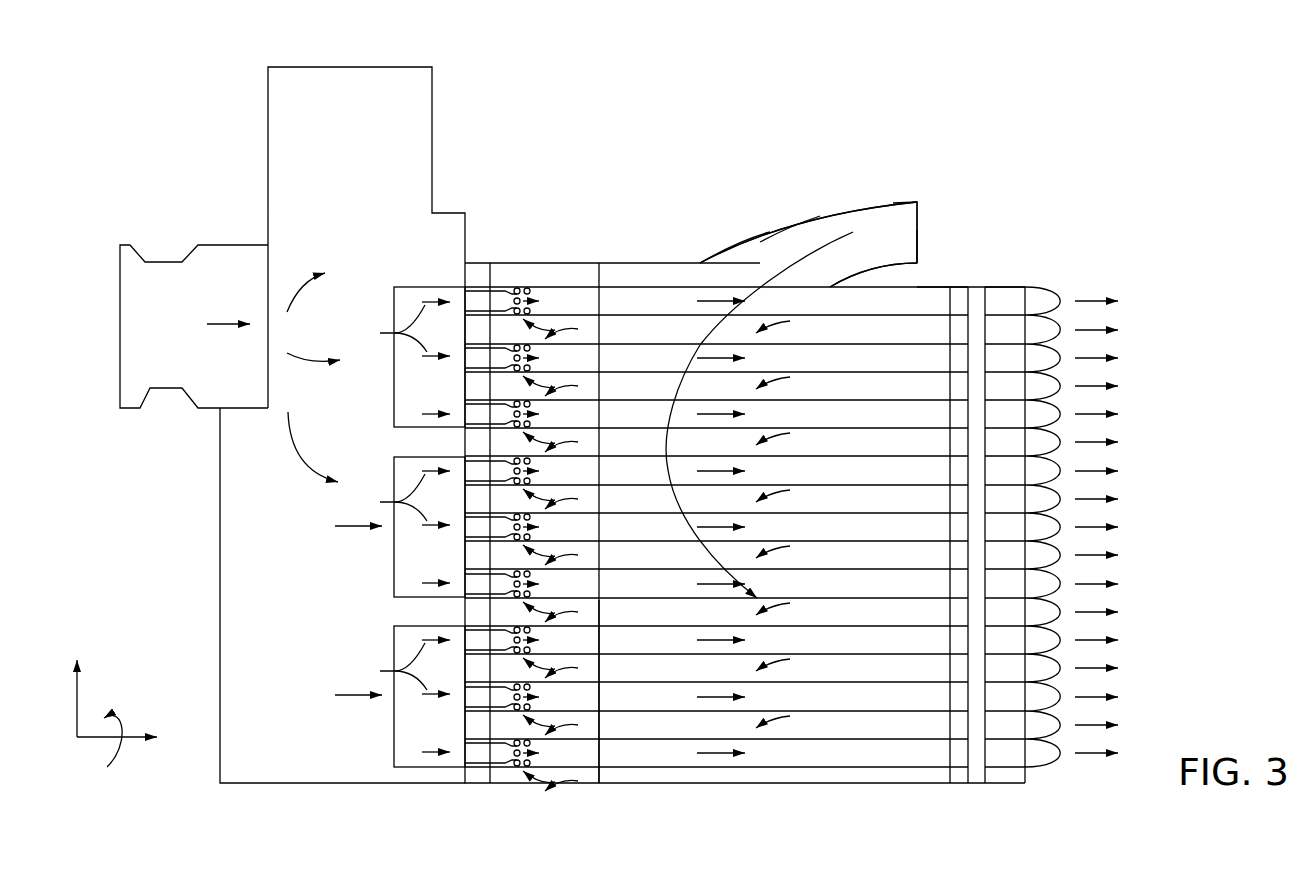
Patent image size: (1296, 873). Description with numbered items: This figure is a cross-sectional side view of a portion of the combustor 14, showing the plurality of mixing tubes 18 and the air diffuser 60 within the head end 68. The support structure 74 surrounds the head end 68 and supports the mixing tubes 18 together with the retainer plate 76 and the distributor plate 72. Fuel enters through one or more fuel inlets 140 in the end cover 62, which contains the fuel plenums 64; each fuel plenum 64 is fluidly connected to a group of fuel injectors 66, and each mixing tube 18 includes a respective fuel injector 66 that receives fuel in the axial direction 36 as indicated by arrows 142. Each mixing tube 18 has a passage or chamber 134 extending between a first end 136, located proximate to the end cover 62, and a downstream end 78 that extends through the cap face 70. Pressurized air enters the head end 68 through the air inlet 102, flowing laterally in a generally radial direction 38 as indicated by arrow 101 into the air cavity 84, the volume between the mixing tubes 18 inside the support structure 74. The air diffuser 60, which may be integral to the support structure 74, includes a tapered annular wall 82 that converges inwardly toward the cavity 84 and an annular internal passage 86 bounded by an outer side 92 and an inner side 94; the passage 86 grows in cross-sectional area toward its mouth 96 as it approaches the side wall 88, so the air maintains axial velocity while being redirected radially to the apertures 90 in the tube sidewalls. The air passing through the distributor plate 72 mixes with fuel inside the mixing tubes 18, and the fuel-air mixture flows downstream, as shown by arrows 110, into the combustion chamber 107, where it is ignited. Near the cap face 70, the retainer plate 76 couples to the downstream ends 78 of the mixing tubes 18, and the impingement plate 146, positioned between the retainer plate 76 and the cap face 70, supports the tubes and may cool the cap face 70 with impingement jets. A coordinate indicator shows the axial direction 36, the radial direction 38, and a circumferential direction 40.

The combustor 14 is at (1045, 86).
The mixing tubes 18 is at (637, 302).
The axial direction 36 is at (108, 742).
The radial direction 38 is at (75, 705).
The circumferential direction 40 is at (120, 718).
The air diffuser 60 is at (803, 225).
The end cover 62 is at (354, 85).
The fuel plenums 64 is at (392, 287).
The fuel injectors 66 is at (503, 292).
The head end 68 is at (637, 110).
The cap face 70 is at (1028, 305).
The distributor plate 72 is at (597, 690).
The support structure 74 is at (593, 262).
The retainer plate 76 is at (955, 312).
The downstream end 78 is at (1072, 290).
The tapered annular wall 82 is at (898, 203).
The air cavity 84 is at (727, 278).
The annular internal passage 86 is at (760, 242).
The side wall 88 is at (901, 288).
The apertures 90 is at (522, 288).
The outer side 92 is at (737, 242).
The inner side 94 is at (903, 262).
The mouth 96 is at (820, 271).
The arrow 101 is at (830, 237).
The air inlet 102 is at (782, 250).
The combustion chamber 107 is at (1121, 513).
The arrows 110 is at (712, 755).
The passage or chamber 134 is at (808, 311).
The first end 136 is at (455, 279).
The fuel inlets 140 is at (128, 290).
The arrows 142 is at (394, 527).
The impingement plate 146 is at (977, 300).